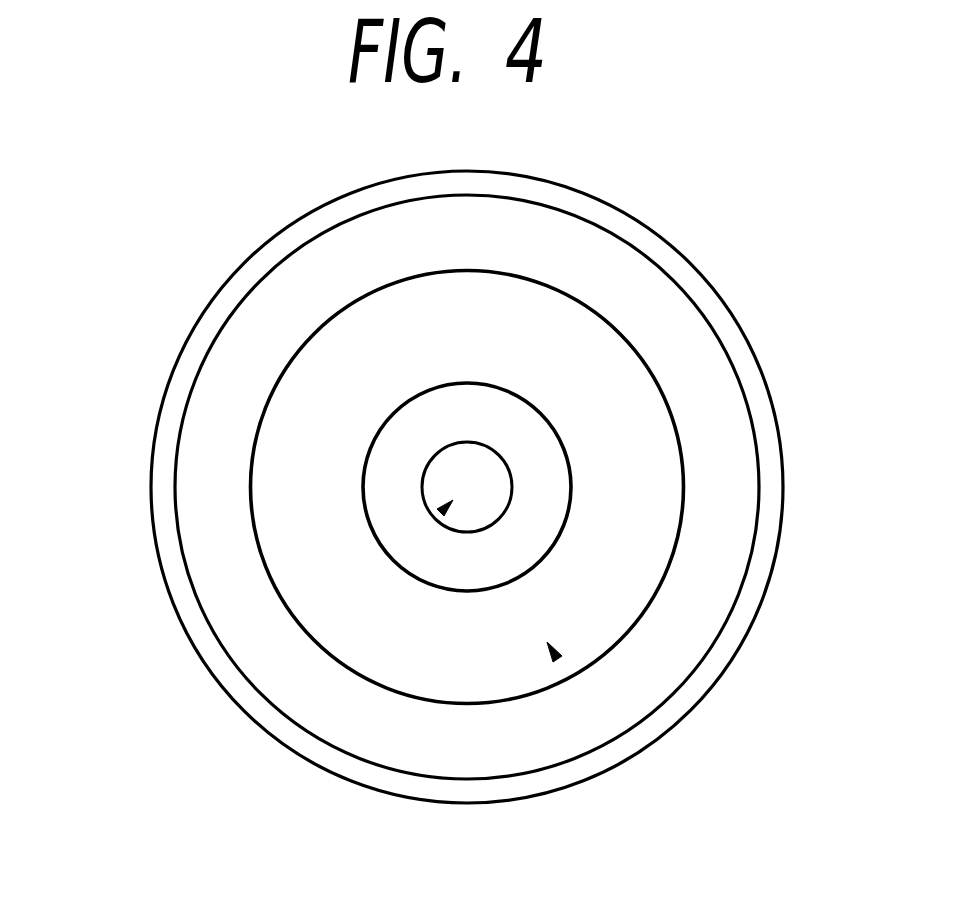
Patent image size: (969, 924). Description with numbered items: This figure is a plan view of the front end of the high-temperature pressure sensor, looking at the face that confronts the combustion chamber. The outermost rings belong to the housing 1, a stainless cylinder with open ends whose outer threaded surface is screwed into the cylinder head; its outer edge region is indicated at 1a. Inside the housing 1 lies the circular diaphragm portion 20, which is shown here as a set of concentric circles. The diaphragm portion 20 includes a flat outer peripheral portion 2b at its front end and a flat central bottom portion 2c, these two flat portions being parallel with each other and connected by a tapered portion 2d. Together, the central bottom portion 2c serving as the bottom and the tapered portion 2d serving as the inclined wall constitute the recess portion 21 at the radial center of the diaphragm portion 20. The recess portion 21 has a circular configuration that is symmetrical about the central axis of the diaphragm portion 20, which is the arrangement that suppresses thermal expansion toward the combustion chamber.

The housing 1 is at (200, 439).
The outer peripheral edge of substrate 1a is at (177, 590).
The outer peripheral portion 2b is at (618, 570).
The central bottom portion 2c is at (483, 465).
The tapered portion 2d is at (543, 503).
The diaphragm portion 20 is at (553, 650).
The recess portion 21 is at (446, 507).